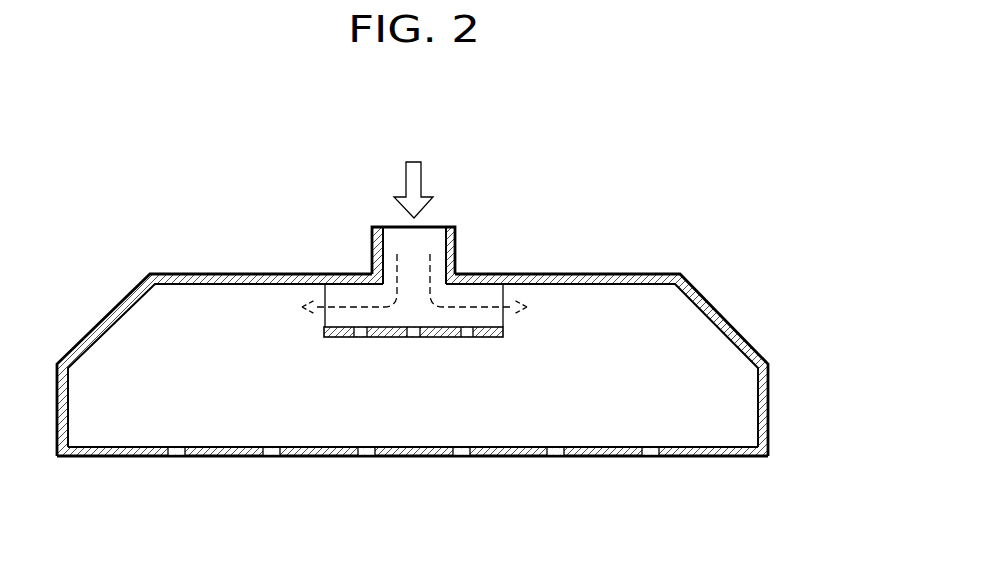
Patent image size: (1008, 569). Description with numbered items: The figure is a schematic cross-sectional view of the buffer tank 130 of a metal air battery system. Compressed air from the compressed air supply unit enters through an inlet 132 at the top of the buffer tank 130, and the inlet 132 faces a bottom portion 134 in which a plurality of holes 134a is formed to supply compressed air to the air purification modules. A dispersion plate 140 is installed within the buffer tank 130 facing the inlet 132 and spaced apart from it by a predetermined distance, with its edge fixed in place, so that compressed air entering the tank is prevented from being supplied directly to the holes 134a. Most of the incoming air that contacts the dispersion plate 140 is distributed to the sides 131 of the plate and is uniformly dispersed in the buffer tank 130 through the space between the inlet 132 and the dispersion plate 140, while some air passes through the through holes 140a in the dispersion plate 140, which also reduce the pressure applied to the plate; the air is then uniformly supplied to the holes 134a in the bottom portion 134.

The buffer tank 130 is at (676, 224).
The sides 131 is at (768, 408).
The inlet 132 is at (455, 247).
The bottom portion 134 is at (705, 456).
The holes 134a is at (365, 456).
The dispersion plate 140 is at (503, 332).
The through holes 140a is at (465, 337).